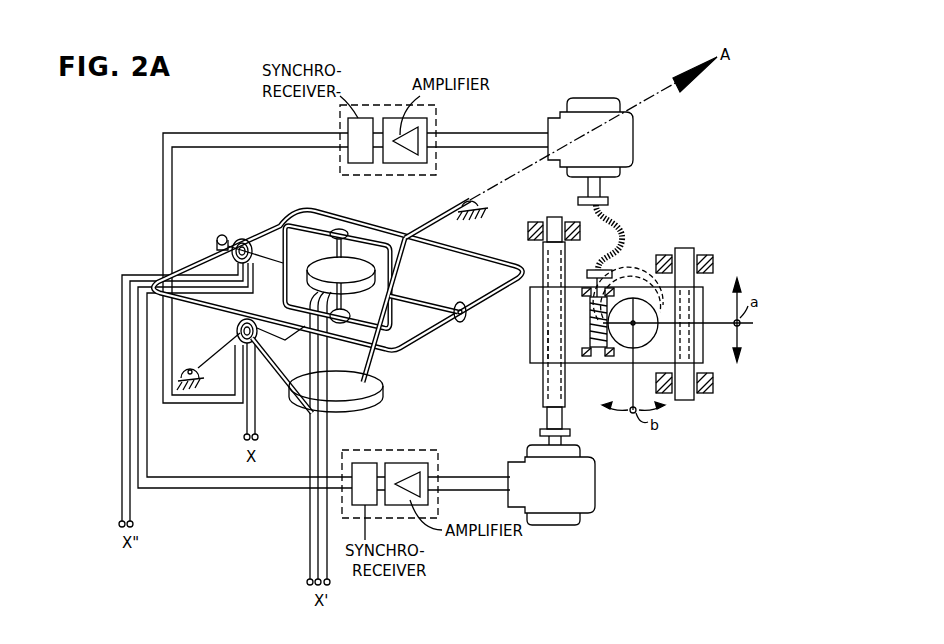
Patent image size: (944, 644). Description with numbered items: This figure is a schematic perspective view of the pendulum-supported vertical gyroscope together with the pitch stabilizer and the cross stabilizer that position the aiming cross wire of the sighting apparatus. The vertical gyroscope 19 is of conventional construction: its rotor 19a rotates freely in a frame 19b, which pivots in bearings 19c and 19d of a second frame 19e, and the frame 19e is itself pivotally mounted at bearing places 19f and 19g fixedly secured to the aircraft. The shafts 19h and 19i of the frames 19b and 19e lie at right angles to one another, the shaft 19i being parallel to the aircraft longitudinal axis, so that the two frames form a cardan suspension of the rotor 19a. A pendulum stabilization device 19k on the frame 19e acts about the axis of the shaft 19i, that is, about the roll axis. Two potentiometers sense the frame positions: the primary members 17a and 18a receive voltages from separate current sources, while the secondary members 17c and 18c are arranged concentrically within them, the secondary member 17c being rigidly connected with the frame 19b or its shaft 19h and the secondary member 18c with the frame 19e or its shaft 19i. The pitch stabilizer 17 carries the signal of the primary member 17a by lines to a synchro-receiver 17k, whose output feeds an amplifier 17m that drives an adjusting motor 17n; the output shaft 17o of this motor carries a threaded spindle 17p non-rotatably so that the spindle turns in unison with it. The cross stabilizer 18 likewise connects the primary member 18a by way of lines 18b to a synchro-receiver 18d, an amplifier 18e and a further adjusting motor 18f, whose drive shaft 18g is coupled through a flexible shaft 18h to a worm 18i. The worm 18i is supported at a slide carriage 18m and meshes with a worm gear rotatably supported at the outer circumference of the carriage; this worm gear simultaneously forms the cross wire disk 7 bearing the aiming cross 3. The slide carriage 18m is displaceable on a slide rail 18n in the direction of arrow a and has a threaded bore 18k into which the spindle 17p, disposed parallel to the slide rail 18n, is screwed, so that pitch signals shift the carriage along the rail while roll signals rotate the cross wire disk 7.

The aiming cross 3 is at (628, 340).
The cross wire disk 7 is at (645, 333).
The pitch stabilizer 17 is at (528, 548).
The primary member of the pitch stabilizer potentiometer 17a is at (247, 238).
The secondary member of the pitch stabilizer potentiometer 17c is at (234, 242).
The synchro-receiver 17k is at (368, 472).
The amplifier 17m is at (410, 470).
The adjusting motor 17n is at (565, 505).
The output shaft 17o is at (550, 440).
The threaded spindle 17p is at (553, 398).
The cross stabilizer 18 is at (558, 68).
The primary member of the second potentiometer 18a is at (254, 348).
The wiring 18b is at (192, 184).
The secondary member of the second potentiometer 18c is at (240, 343).
The synchro-receiver 18d is at (348, 128).
The amplifier 18e is at (424, 130).
The adjusting motor 18f is at (566, 116).
The drive shaft 18g is at (618, 188).
The flexible shaft 18h is at (624, 246).
The worm 18i is at (598, 300).
The threaded bore 18k is at (548, 332).
The slide carriage 18m is at (725, 300).
The slide rail 18n is at (690, 260).
The vertical gyroscope 19 is at (214, 114).
The gyroscope rotor 19a is at (352, 262).
The frame 19b is at (308, 226).
The bearing 19c is at (217, 242).
The bearing 19d is at (459, 303).
The second frame 19e is at (487, 298).
The bearing place 19f is at (188, 368).
The bearing place 19g is at (480, 206).
The shaft 19h is at (425, 296).
The shaft 19i is at (432, 223).
The pendulum stabilization device 19k is at (376, 395).